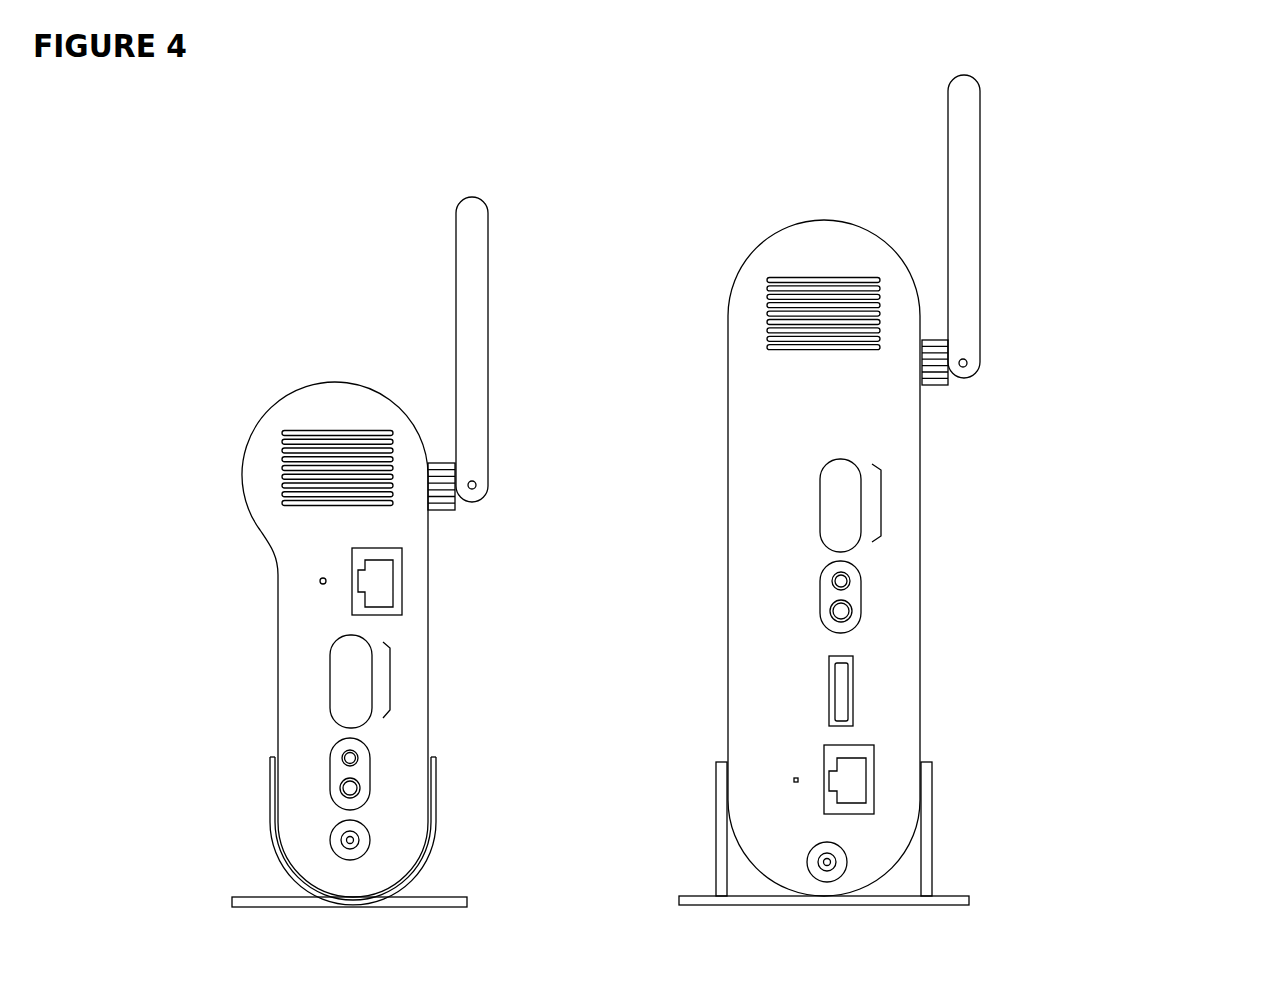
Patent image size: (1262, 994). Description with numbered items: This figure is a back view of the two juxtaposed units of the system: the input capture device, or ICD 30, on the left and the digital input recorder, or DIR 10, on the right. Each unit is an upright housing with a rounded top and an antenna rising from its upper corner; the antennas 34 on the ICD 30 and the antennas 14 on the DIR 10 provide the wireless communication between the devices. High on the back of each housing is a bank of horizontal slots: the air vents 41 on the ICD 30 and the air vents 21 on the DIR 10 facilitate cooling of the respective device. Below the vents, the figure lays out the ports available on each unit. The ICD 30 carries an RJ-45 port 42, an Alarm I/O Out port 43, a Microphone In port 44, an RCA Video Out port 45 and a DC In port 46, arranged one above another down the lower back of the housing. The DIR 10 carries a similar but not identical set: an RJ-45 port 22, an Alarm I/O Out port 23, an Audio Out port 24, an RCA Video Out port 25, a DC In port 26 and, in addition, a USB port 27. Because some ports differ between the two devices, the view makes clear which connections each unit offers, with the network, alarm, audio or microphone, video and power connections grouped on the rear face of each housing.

The digital input recorder 10 is at (772, 207).
The antennas 14 is at (988, 203).
The air vents 21 is at (762, 305).
The RJ-45 port 22 is at (852, 780).
The Alarm I/O Out port 23 is at (881, 488).
The Audio Out port 24 is at (850, 580).
The RCA Video Out port 25 is at (852, 611).
The DC In port 26 is at (847, 862).
The USB port 27 is at (855, 685).
The input capture device 30 is at (258, 375).
The antennas 34 is at (502, 230).
The air vents 41 is at (275, 457).
The RJ-45 port 42 is at (382, 582).
The Alarm I/O Out port 43 is at (390, 668).
The Microphone In port 44 is at (358, 753).
The RCA Video Out port 45 is at (360, 792).
The DC In port 46 is at (370, 840).